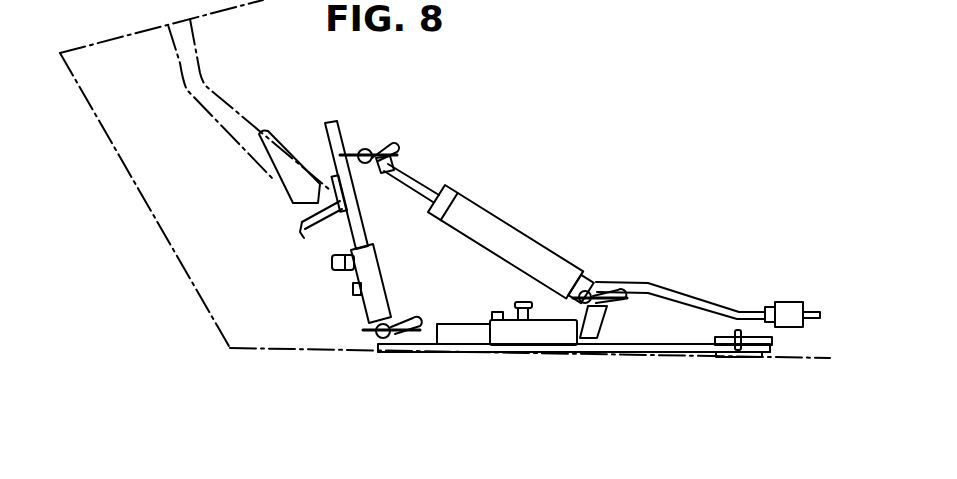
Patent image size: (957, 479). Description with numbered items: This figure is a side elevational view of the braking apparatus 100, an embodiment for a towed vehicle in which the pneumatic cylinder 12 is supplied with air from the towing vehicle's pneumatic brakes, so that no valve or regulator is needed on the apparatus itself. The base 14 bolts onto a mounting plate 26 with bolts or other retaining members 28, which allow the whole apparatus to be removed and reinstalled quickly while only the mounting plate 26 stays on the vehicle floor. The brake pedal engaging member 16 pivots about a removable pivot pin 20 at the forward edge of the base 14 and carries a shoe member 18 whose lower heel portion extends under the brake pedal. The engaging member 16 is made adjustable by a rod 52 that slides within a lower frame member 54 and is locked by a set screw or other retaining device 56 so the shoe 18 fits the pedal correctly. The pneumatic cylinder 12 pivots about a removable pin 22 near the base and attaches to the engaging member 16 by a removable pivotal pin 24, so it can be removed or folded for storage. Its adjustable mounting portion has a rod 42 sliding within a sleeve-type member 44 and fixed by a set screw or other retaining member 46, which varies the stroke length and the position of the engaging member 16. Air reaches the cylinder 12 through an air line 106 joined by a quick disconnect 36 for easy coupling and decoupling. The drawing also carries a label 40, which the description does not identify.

The pneumatic cylinder 12 is at (517, 233).
The base 14 is at (488, 347).
The brake pedal engaging member 16 is at (337, 125).
The shoe member 18 is at (299, 229).
The pivot pin 20 is at (378, 333).
The removable pin 22 is at (580, 338).
The removable pivotal pin 24 is at (368, 140).
The mounting plate 26 is at (755, 360).
The retaining members 28 is at (773, 334).
The quick disconnect 36 is at (790, 305).
The mounting assembly 40 is at (527, 366).
The rod 42 is at (452, 323).
The sleeve-type member 44 is at (515, 353).
The set screw or other retaining member 46 is at (517, 303).
The rod 52 is at (363, 217).
The lower frame member 54 is at (365, 300).
The set screw or other retaining device 56 is at (332, 263).
The braking apparatus 100 is at (505, 167).
The air line 106 is at (815, 312).